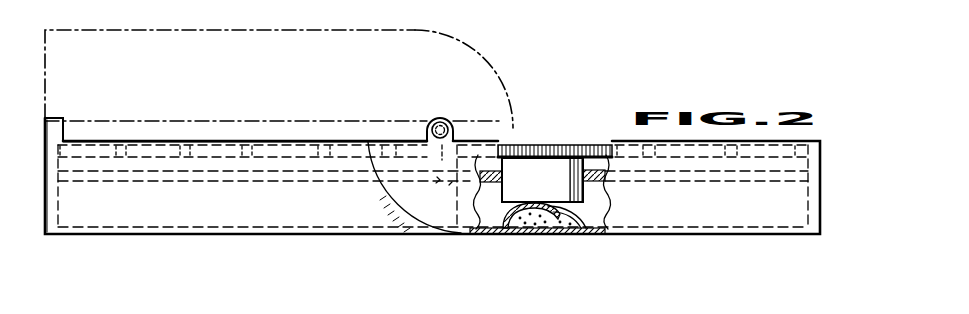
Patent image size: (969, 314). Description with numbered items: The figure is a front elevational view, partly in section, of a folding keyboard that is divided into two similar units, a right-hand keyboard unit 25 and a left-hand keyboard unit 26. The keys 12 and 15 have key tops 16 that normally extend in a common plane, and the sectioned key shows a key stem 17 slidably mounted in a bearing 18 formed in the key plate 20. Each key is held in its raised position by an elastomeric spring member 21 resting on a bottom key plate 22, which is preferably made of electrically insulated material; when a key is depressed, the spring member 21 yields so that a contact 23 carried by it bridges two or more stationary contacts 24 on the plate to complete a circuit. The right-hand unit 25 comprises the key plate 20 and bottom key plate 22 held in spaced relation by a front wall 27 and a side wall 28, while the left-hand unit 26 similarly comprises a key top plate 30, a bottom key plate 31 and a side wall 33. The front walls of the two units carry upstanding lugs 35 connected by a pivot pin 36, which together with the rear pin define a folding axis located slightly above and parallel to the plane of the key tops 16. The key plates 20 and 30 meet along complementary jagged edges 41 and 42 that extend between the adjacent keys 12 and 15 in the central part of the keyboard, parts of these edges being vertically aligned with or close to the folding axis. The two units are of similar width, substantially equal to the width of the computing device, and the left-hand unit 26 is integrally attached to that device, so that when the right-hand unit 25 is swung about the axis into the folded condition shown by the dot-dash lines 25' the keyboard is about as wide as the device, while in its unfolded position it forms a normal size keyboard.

The key 12 is at (141, 152).
The key 15 is at (567, 147).
The key top 16 is at (204, 143).
The key stem 17 is at (606, 190).
The bearing 18 is at (507, 199).
The key plate 20 is at (589, 176).
The elastomeric spring member 21 is at (598, 218).
The bottom key plate 22 is at (596, 237).
The contact 23 is at (553, 232).
The stationary contacts 24 is at (538, 225).
The right-hand keyboard unit 25 is at (376, 145).
The folded condition of right-hand unit 25' is at (449, 131).
The left-hand keyboard unit 26 is at (337, 245).
The front wall 27 is at (776, 222).
The side wall 28 is at (822, 181).
The key top plate 30 is at (258, 176).
The bottom key plate 31 is at (172, 235).
The side wall 33 is at (43, 186).
The upstanding lug 35 is at (431, 123).
The pivot pin 36 is at (447, 121).
The jagged edge 41 is at (436, 184).
The jagged edge 42 is at (449, 186).